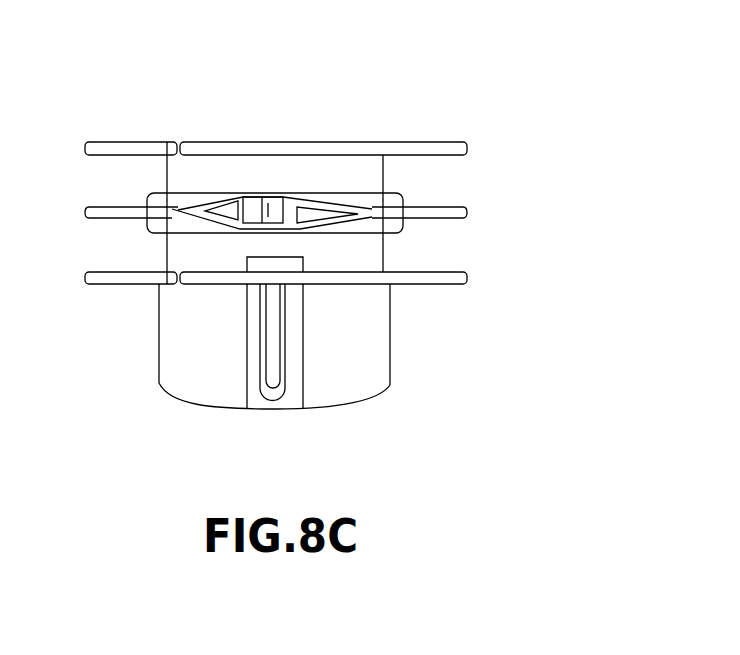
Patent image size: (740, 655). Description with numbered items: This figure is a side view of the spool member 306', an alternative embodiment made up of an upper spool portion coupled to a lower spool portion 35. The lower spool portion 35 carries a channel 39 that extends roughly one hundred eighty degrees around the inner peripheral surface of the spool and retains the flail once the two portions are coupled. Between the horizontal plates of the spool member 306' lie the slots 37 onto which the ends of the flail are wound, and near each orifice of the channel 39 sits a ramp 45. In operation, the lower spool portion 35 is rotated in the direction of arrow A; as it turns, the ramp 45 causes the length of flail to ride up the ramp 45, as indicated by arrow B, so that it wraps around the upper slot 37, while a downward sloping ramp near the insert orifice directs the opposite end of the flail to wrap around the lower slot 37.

The spool member 306' is at (317, 255).
The slot 37 is at (462, 178).
The channel 39 is at (285, 205).
The ramp 45 is at (217, 225).
The lower spool portion 35 is at (391, 386).
The arrow B is at (232, 212).
The arrow A is at (373, 425).